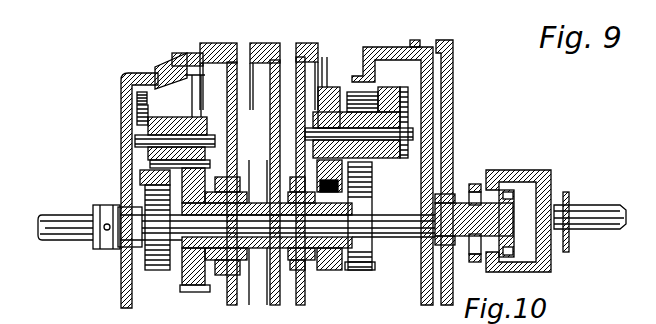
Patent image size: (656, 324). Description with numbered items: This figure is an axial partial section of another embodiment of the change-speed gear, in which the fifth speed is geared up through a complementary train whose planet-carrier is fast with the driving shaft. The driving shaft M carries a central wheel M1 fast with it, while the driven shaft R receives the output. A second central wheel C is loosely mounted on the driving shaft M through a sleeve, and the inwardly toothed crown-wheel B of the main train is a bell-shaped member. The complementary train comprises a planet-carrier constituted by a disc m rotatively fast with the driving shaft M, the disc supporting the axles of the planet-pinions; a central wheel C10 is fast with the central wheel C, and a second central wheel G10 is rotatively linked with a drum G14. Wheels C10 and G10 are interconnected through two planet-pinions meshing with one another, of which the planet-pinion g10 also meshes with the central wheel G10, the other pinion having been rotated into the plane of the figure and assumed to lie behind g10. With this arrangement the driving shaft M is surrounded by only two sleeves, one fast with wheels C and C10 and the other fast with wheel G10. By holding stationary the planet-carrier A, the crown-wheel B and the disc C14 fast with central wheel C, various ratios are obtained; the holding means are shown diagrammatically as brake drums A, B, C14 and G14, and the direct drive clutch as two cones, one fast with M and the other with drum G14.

The central wheel C10 is at (133, 75).
The planet-pinion g10 is at (175, 118).
The drum G14 is at (201, 68).
The disc C14 is at (273, 55).
The planet-carrier A is at (309, 54).
The driven shaft R is at (385, 67).
The crown-wheel B is at (448, 46).
The disc m is at (125, 118).
The driving shaft M is at (67, 226).
The second central wheel G10 is at (189, 292).
The second central wheel C is at (327, 262).
The central wheel M1 is at (360, 270).